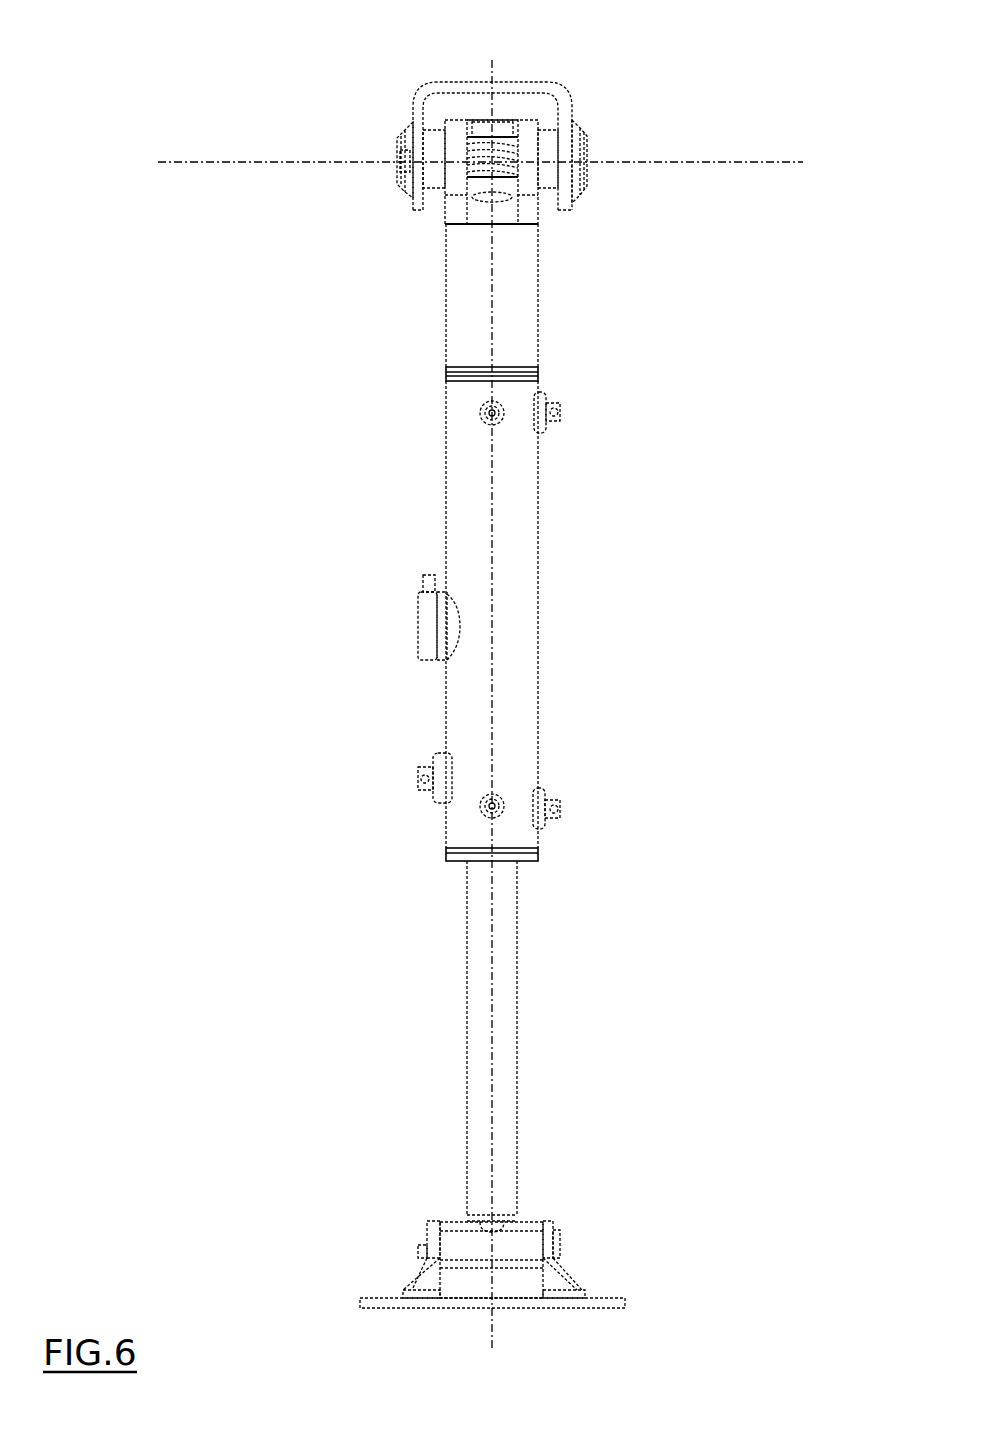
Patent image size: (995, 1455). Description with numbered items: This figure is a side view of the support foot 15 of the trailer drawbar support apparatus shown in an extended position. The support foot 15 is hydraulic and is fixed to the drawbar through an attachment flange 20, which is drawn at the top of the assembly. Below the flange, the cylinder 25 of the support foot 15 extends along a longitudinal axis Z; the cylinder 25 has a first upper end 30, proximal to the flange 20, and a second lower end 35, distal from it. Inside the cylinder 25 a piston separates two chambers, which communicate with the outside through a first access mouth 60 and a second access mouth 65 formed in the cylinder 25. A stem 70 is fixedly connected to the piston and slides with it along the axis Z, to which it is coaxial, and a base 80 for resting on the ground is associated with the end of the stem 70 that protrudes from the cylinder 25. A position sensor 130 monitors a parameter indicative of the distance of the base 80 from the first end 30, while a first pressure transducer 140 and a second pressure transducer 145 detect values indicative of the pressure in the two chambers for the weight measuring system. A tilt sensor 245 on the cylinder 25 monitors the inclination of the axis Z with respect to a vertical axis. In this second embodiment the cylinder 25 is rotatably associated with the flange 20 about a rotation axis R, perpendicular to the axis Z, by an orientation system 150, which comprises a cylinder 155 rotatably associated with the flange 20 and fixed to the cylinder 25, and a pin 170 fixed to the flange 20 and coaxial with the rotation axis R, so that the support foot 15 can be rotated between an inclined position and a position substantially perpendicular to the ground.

The support foot 15 is at (158, 118).
The attachment flange 20 is at (543, 88).
The cylinder 25 is at (525, 603).
The first upper end 30 is at (528, 385).
The second lower end 35 is at (522, 848).
The first access mouth 60 is at (482, 418).
The second access mouth 65 is at (483, 815).
The stem 70 is at (507, 1025).
The base 80 is at (612, 1298).
The position sensor 130 is at (422, 775).
The first pressure transducer 140 is at (565, 813).
The second pressure transducer 145 is at (550, 425).
The orientation system 150 is at (590, 225).
The cylinder 155 is at (525, 292).
The pin 170 is at (583, 173).
The tilt sensor 245 is at (425, 618).
The longitudinal axis Z is at (492, 60).
The rotation axis R is at (753, 162).